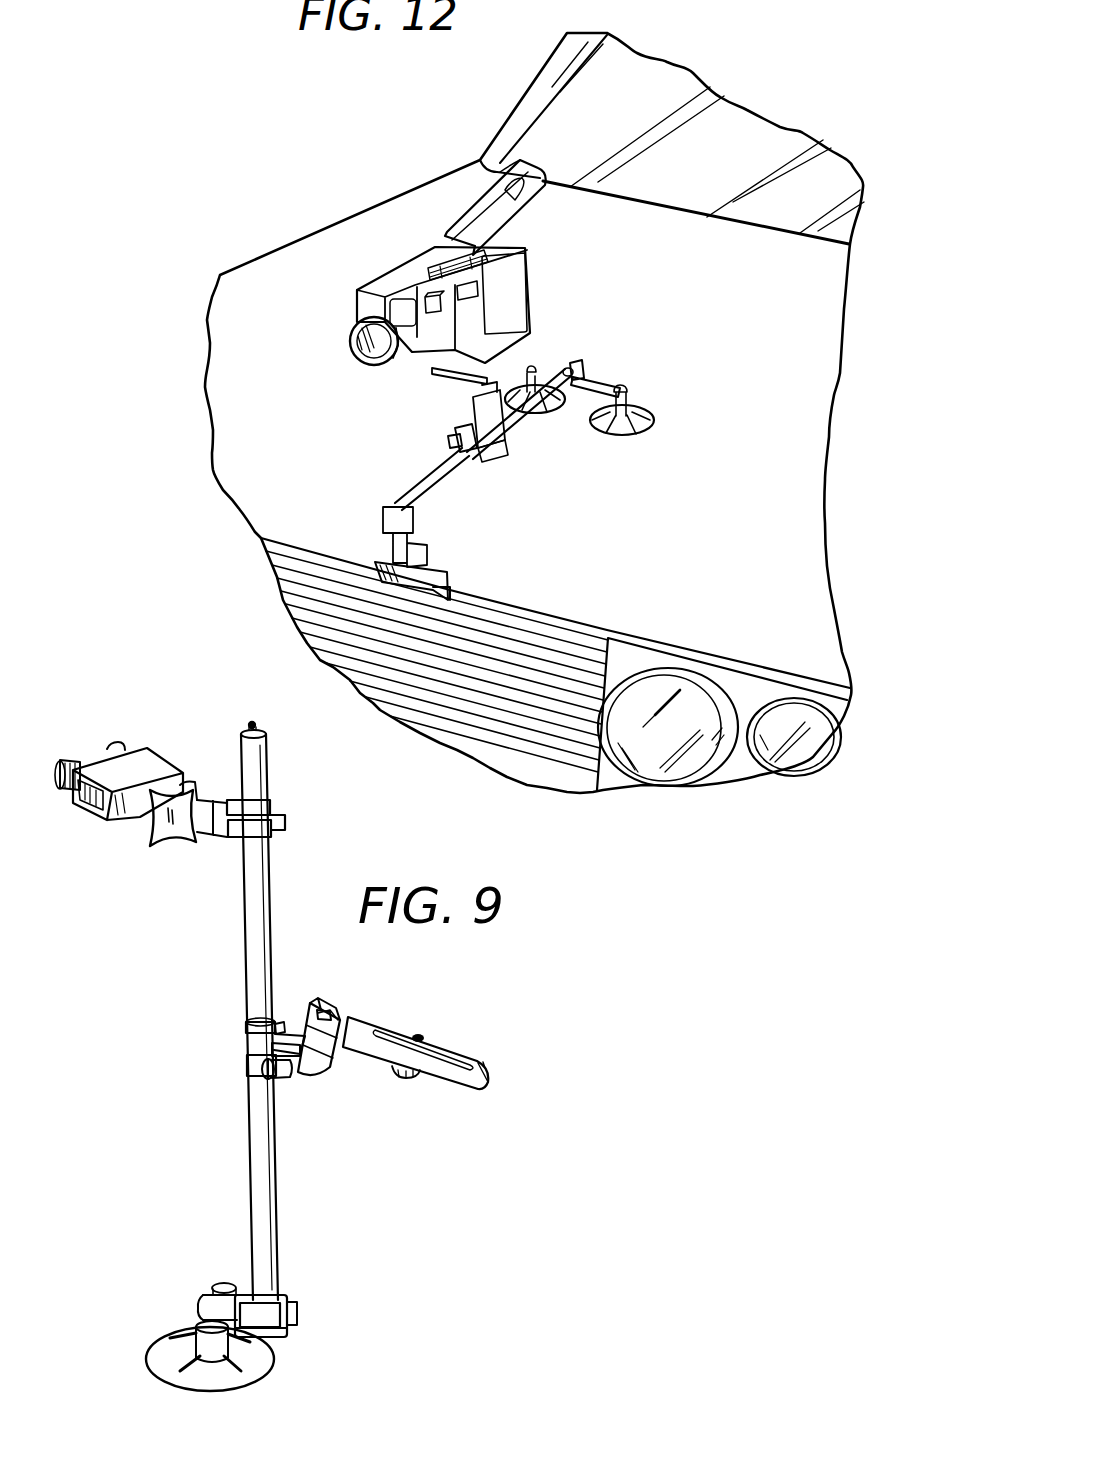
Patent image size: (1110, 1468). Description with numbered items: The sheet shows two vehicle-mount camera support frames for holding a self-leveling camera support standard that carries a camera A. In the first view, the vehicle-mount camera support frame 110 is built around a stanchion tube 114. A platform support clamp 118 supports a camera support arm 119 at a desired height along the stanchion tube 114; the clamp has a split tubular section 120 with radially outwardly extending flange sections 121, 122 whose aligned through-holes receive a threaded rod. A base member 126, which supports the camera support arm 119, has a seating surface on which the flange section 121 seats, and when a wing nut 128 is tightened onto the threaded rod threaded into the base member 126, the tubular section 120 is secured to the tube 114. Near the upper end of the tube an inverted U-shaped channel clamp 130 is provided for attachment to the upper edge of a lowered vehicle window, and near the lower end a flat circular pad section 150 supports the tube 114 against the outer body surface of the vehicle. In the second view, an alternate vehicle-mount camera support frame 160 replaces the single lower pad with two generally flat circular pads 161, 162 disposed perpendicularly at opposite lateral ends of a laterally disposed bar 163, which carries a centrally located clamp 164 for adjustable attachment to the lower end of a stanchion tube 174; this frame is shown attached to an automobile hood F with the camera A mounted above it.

In FIG. 12, the camera A is at (396, 260).
In FIG. 12, the automobile hood F is at (793, 536).
In FIG. 12, the vehicle-mount camera support frame 160 is at (584, 332).
In FIG. 12, the circular pad 161 is at (535, 420).
In FIG. 12, the circular pad 162 is at (638, 437).
In FIG. 12, the bar 163 is at (613, 384).
In FIG. 12, the clamp 164 is at (579, 384).
In FIG. 12, the stanchion tube 174 is at (440, 480).
In FIG. 9, the vehicle-mount camera support frame 110 is at (312, 908).
In FIG. 9, the stanchion tube 114 is at (258, 1180).
In FIG. 9, the platform support clamp 118 is at (355, 1003).
In FIG. 9, the camera support arm 119 is at (483, 1066).
In FIG. 9, the split tubular section 120 is at (247, 1040).
In FIG. 9, the flange section 121 is at (285, 1028).
In FIG. 9, the flange section 122 is at (267, 1050).
In FIG. 9, the base member 126 is at (345, 1048).
In FIG. 9, the wing nut 128 is at (353, 1010).
In FIG. 9, the inverted U-shaped channel clamp 130 is at (152, 763).
In FIG. 9, the circular pad section 150 is at (286, 1349).